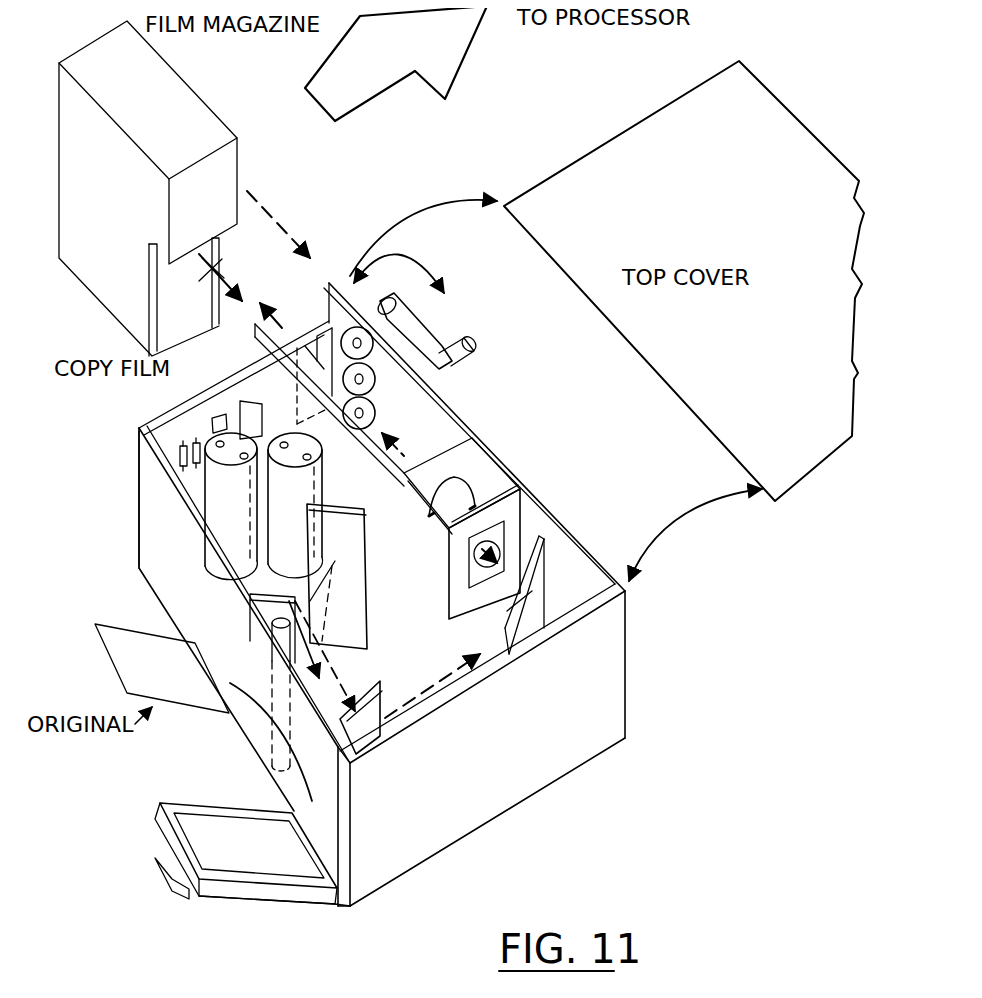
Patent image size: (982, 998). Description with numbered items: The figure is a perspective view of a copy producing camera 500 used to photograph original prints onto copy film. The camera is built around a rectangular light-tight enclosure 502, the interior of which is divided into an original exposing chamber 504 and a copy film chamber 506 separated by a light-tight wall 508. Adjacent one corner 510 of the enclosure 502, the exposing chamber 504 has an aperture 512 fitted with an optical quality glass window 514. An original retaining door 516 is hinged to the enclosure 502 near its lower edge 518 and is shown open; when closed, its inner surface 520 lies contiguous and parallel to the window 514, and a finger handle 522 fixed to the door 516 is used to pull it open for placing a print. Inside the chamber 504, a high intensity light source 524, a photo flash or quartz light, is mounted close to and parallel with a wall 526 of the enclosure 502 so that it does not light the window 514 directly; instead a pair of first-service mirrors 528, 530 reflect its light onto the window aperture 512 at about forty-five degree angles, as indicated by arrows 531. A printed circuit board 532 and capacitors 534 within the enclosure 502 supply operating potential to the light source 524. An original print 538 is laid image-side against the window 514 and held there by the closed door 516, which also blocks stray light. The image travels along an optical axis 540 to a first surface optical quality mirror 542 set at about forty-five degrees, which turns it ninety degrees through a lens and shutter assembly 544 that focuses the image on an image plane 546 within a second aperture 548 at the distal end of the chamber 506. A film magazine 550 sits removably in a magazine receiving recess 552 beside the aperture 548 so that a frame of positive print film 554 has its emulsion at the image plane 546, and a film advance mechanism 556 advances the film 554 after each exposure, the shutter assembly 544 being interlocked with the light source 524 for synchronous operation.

The copy producing camera 500 is at (647, 668).
The light-tight enclosure 502 is at (550, 770).
The original exposing chamber 504 is at (543, 535).
The copy film chamber 506 is at (456, 418).
The light-tight wall 508 is at (507, 508).
The corner 510 is at (352, 848).
The aperture 512 is at (327, 797).
The optical quality glass window 514 is at (349, 761).
The original retaining door 516 is at (302, 893).
The lower edge 518 is at (340, 908).
The inner surface 520 is at (247, 865).
The finger handle 522 is at (170, 892).
The high intensity light source 524 is at (270, 635).
The wall 526 is at (160, 533).
The first-service mirror 528 is at (352, 557).
The first-service mirror 530 is at (370, 675).
The arrows 531 is at (340, 690).
The printed circuit board 532 is at (140, 435).
The capacitors 534 is at (300, 436).
The original print 538 is at (333, 595).
The optical axis 540 is at (457, 673).
The first surface optical quality mirror 542 is at (513, 580).
The lens and shutter assembly 544 is at (455, 500).
The image plane 546 is at (330, 347).
The second aperture 548 is at (380, 391).
The film magazine 550 is at (240, 163).
The magazine receiving recess 552 is at (304, 302).
The positive print film 554 is at (212, 266).
The film advance mechanism 556 is at (410, 323).